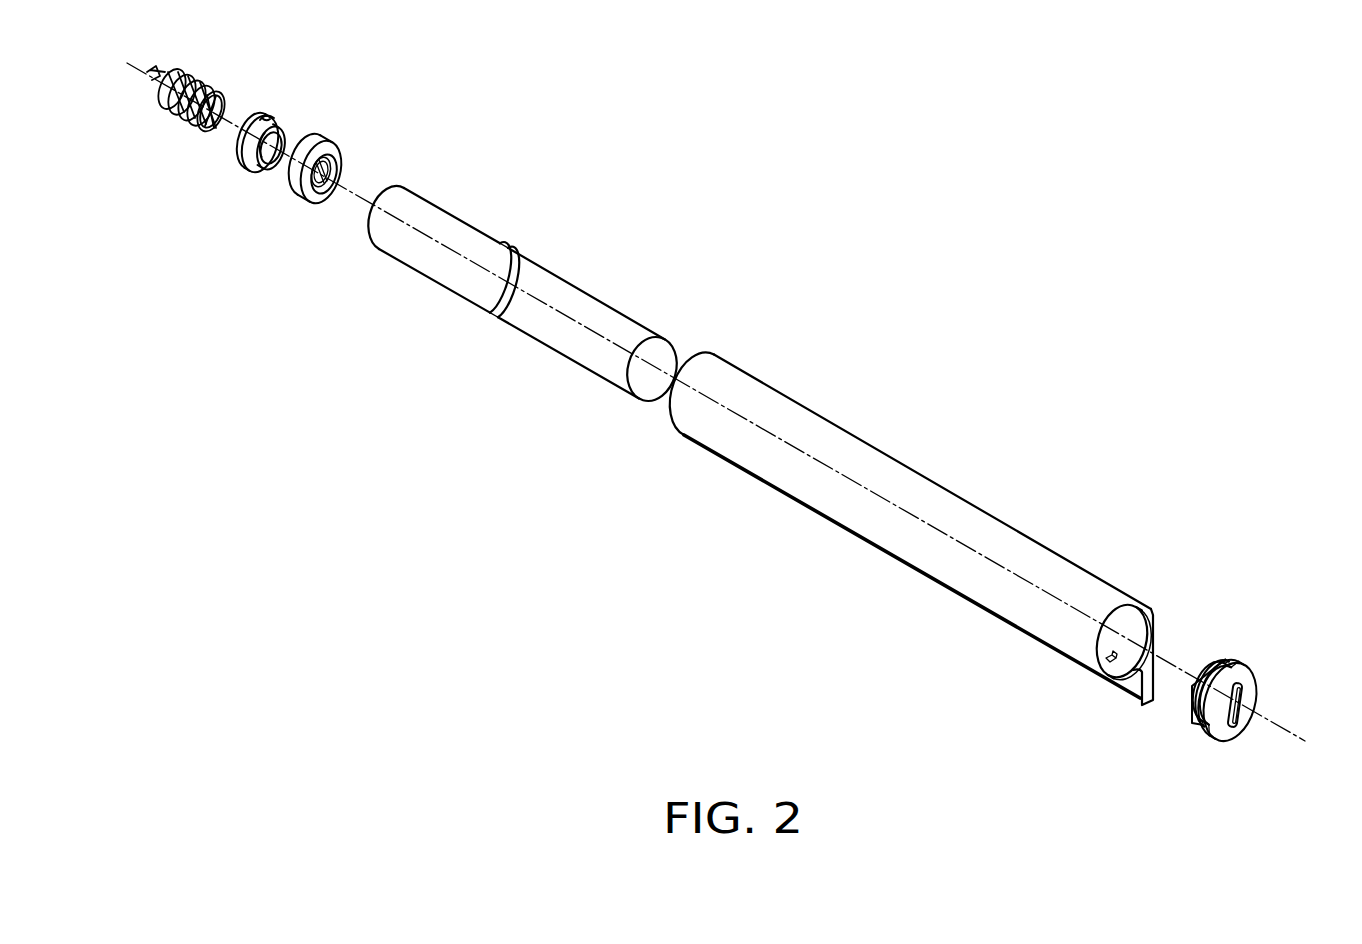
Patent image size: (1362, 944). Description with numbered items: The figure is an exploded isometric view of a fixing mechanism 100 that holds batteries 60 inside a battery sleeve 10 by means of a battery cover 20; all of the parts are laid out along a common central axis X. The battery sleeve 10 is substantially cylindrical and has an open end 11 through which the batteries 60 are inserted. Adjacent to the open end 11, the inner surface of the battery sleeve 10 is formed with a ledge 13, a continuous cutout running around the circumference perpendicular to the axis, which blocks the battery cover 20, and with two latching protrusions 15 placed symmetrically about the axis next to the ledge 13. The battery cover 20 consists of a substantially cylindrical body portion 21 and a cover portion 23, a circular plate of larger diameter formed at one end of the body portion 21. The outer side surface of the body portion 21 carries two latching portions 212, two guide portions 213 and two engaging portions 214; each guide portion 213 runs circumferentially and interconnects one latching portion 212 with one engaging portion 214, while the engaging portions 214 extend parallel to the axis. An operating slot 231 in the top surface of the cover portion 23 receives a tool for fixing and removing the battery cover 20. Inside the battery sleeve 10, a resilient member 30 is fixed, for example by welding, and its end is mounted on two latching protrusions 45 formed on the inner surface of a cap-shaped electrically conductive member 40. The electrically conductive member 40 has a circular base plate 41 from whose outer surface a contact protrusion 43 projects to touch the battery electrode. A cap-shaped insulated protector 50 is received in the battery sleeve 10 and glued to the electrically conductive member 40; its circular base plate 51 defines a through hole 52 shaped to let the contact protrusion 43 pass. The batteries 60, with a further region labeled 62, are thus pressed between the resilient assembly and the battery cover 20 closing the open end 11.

The fixing mechanism 100 is at (822, 168).
The battery sleeve 10 is at (817, 447).
The open end 11 is at (1122, 620).
The ledge 13 is at (1148, 630).
The latching protrusion 15 is at (1110, 657).
The battery cover 20 is at (1268, 604).
The body portion 21 is at (1237, 667).
The latching portion 212 is at (1220, 673).
The guide portion 213 is at (1198, 723).
The engaging portion 214 is at (1197, 707).
The cover portion 23 is at (1253, 693).
The operating slot 231 is at (1257, 720).
The resilient member 30 is at (202, 83).
The electrically conductive member 40 is at (272, 122).
The base plate 41 is at (253, 163).
The contact protrusion 43 is at (273, 167).
The latching protrusion 45 is at (260, 113).
The insulated protector 50 is at (320, 142).
The base plate 51 is at (302, 193).
The through hole 52 is at (328, 203).
The battery 60 is at (570, 303).
The shaft end 62 is at (645, 377).